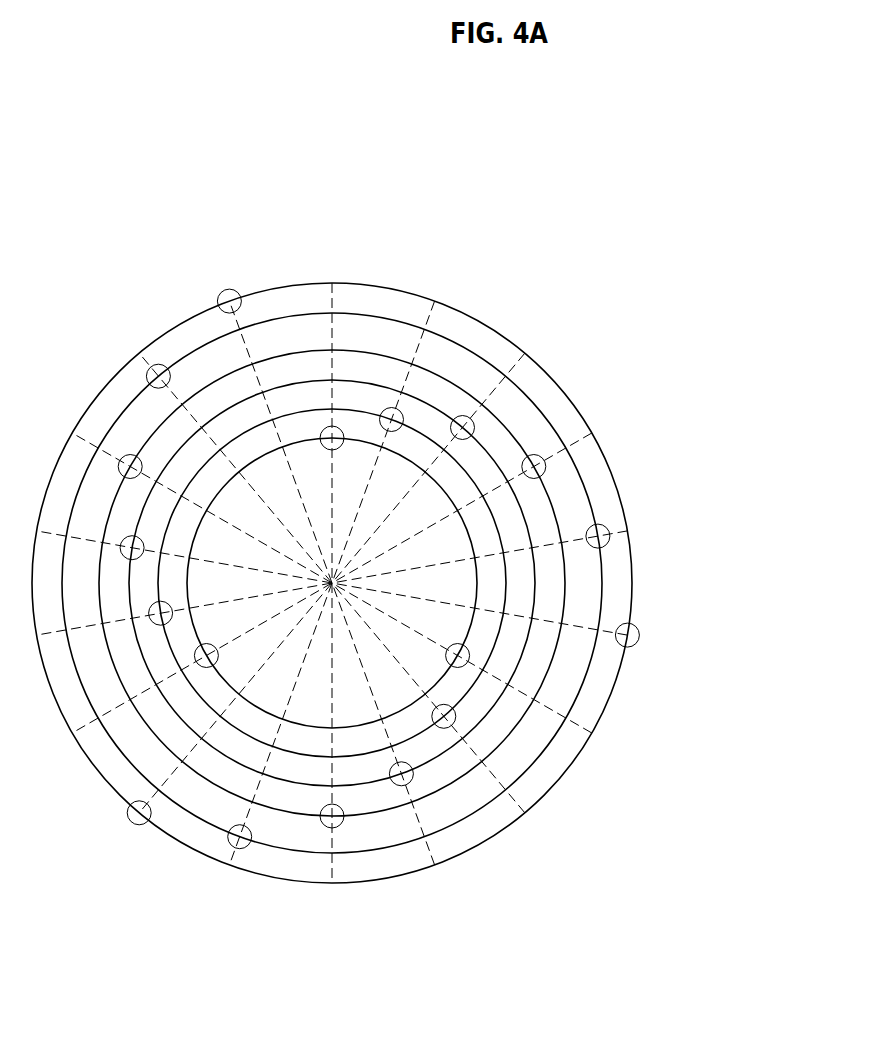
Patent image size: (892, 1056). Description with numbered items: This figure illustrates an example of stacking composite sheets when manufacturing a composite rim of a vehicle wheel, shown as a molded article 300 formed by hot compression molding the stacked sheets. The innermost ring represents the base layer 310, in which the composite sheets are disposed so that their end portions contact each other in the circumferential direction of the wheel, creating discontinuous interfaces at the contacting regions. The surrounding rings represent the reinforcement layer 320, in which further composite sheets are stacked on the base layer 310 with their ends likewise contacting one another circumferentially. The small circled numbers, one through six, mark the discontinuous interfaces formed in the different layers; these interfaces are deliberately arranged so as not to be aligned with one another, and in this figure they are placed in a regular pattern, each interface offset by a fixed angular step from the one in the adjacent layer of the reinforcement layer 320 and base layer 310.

The molded article 300 is at (372, 536).
The base layer 310 is at (445, 488).
The reinforcement layer 320 is at (490, 655).